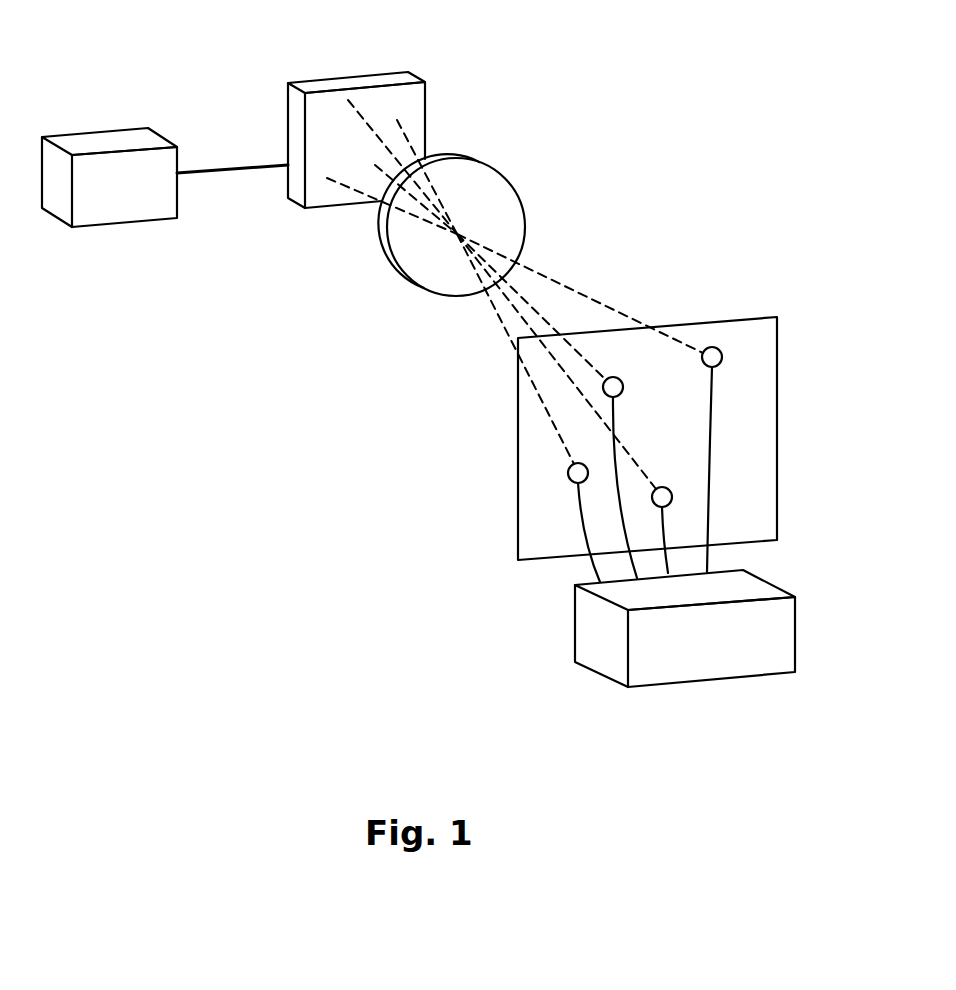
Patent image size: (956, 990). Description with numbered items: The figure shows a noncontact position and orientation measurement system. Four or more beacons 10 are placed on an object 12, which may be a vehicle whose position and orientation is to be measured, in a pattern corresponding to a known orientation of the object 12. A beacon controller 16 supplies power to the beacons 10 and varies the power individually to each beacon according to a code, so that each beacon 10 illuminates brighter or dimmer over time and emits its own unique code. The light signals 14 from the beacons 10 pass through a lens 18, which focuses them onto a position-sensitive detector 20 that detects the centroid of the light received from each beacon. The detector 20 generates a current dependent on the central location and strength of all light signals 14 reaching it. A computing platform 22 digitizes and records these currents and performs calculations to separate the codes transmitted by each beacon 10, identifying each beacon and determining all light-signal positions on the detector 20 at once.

The beacons 10 is at (682, 497).
The object 12 is at (758, 338).
The light signals 14 is at (547, 308).
The beacon controller 16 is at (600, 632).
The lens 18 is at (510, 173).
The position-sensitive detector 20 is at (403, 100).
The computing platform 22 is at (112, 140).